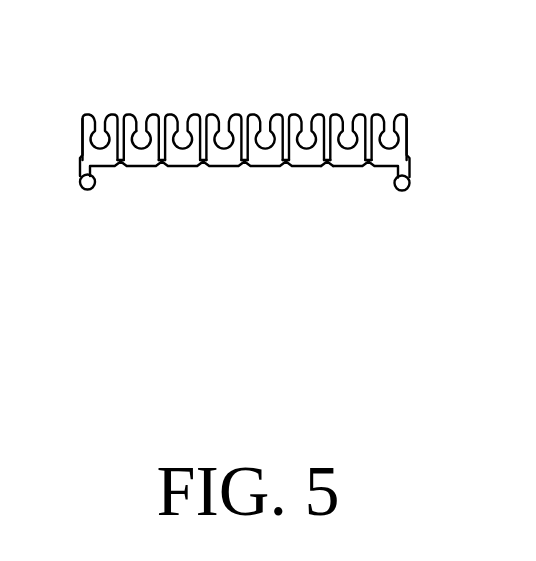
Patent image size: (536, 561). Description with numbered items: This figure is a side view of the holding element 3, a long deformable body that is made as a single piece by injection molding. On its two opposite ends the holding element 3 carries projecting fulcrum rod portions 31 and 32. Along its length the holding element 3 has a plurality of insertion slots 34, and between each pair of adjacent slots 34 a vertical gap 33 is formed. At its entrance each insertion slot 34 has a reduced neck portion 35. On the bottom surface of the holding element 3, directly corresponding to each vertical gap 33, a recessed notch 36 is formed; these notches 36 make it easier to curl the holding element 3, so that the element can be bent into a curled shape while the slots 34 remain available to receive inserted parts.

The holding element 3 is at (241, 142).
The fulcrum rod portion 31 is at (88, 190).
The fulcrum rod portion 32 is at (402, 191).
The vertical gap 33 is at (167, 113).
The insertion slot 34 is at (118, 150).
The reduced neck portion 35 is at (140, 125).
The recessed notch 36 is at (328, 167).